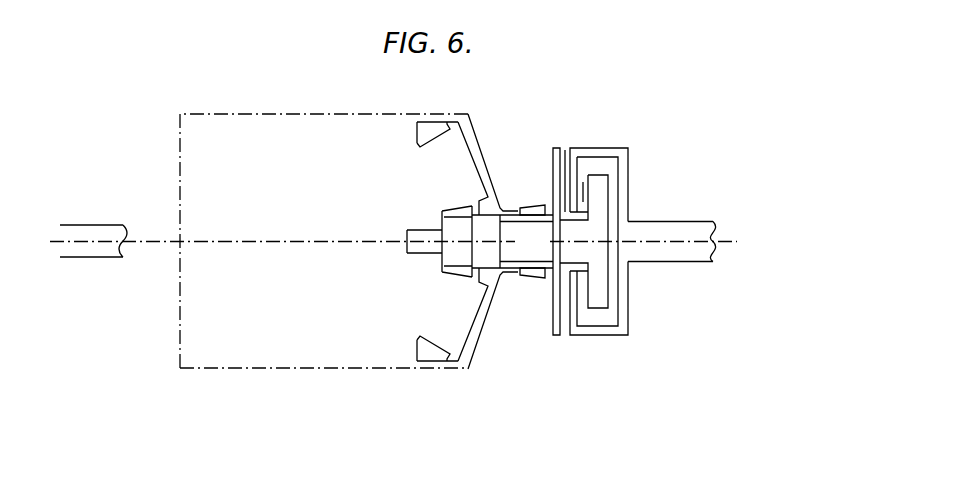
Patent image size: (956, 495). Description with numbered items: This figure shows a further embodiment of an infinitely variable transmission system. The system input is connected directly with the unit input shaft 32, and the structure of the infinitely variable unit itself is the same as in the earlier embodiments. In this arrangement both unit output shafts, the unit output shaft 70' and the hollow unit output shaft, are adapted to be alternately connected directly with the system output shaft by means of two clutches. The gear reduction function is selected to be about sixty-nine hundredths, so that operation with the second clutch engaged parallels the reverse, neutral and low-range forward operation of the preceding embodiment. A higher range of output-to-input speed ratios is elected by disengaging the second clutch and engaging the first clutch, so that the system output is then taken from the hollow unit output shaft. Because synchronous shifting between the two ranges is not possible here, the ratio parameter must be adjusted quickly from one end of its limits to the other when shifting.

The unit input shaft 32 is at (102, 224).
The unit output shaft 70' is at (480, 241).